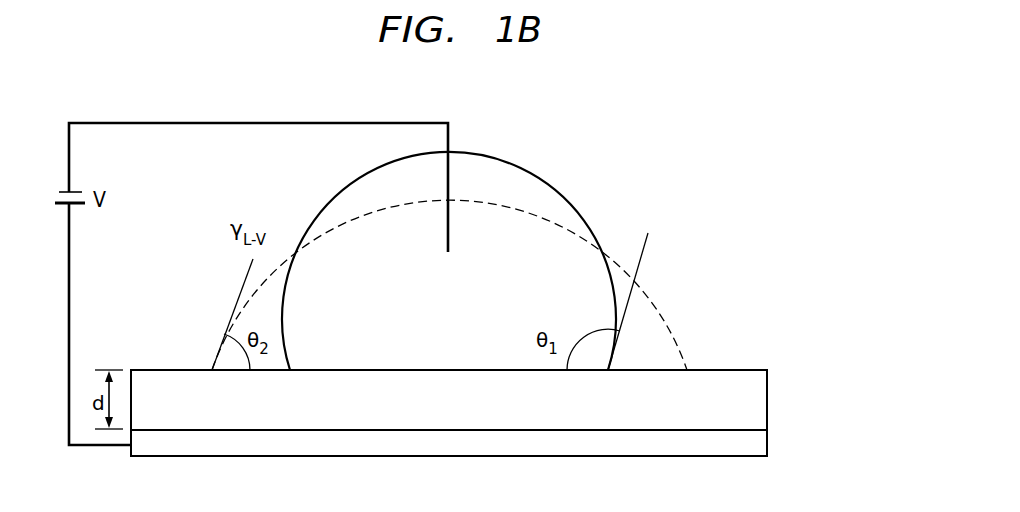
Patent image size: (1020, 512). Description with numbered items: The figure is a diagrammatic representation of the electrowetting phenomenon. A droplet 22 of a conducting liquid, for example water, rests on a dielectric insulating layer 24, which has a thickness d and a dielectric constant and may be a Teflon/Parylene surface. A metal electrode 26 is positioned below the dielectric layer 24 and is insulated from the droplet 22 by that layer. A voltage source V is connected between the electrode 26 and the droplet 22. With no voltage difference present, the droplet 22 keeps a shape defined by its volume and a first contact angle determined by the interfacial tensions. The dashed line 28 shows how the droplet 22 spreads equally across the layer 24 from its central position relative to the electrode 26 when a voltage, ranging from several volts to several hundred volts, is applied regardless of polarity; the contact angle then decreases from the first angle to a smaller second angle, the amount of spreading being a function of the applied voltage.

The droplet 22 is at (533, 177).
The dielectric insulating layer 24 is at (752, 408).
The metal electrode 26 is at (578, 457).
The dashed line 28 is at (657, 308).